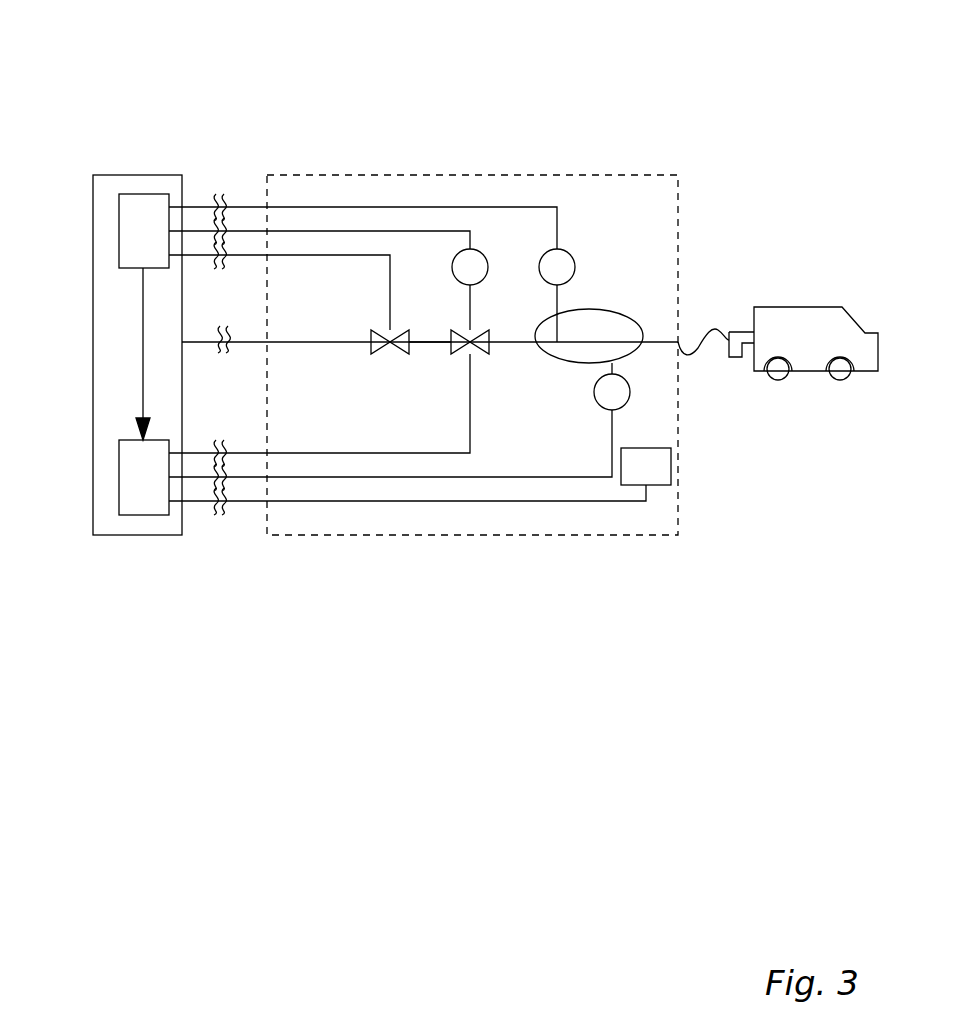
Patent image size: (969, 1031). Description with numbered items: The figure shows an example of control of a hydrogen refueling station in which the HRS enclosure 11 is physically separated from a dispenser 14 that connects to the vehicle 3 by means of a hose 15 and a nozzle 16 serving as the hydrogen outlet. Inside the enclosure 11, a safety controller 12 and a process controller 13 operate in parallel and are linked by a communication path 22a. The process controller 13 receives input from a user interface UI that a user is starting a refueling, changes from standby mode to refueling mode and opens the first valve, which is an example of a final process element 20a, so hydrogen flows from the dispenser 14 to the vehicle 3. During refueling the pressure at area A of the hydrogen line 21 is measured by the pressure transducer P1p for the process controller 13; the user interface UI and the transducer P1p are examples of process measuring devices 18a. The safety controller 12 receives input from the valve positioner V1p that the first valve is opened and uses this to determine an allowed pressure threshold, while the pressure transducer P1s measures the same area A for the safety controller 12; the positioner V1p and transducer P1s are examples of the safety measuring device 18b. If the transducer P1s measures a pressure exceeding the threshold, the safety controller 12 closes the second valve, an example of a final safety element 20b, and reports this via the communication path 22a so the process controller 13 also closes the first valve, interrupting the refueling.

The vehicle 3 is at (827, 307).
The HRS enclosure 11 is at (182, 175).
The safety controller 12 is at (157, 245).
The process controller 13 is at (157, 493).
The dispenser 14 is at (745, 177).
The hose 15 is at (676, 342).
The nozzle 16 is at (735, 357).
The process measuring device 18a is at (688, 496).
The safety measuring device 18b is at (540, 204).
The final process element 20a is at (484, 353).
The final safety element 20b is at (383, 353).
The hydrogen line 21 is at (427, 340).
The communication path 22a is at (142, 290).
The area A is at (623, 310).
The valve positioner V1p is at (482, 250).
The pressure transducer P1s is at (568, 249).
The pressure transducer P1p is at (602, 408).
The user interface UI is at (671, 463).